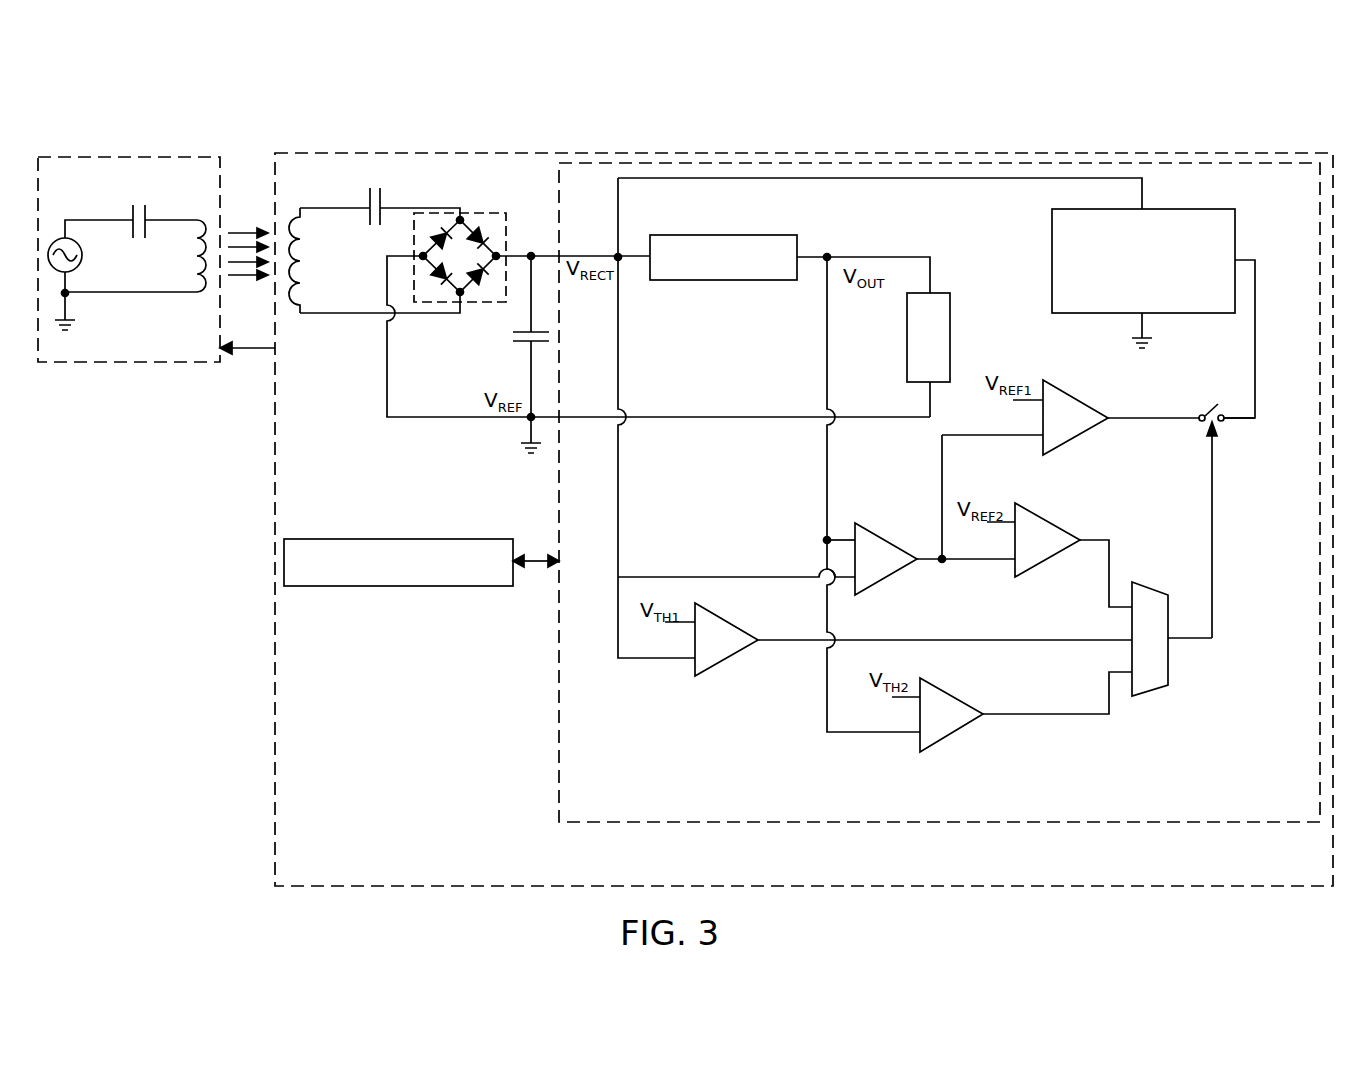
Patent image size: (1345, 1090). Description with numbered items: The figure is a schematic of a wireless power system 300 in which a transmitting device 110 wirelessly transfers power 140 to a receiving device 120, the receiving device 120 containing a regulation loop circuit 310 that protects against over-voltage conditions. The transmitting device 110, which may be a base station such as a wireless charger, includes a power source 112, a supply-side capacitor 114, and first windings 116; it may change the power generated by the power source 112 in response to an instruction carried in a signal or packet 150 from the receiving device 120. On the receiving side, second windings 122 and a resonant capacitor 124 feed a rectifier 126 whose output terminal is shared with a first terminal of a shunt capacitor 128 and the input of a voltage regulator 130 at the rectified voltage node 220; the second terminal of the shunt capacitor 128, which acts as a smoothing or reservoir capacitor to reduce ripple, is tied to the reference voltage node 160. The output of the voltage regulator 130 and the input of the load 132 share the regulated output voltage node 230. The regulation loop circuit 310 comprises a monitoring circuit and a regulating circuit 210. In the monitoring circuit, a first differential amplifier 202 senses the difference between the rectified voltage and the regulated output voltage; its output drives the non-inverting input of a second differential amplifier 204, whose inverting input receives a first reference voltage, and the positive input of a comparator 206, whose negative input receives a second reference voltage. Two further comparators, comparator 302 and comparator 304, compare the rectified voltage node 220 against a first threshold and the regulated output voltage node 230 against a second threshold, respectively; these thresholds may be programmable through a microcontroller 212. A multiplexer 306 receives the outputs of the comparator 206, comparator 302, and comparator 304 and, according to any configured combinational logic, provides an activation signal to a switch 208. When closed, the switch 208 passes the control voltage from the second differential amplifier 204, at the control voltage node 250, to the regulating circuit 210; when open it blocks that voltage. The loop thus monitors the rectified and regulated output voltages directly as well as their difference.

The wireless power system 300 is at (1286, 68).
The transmitting device 110 is at (102, 157).
The power source 112 is at (84, 256).
The supply-side capacitor 114 is at (148, 212).
The first windings 116 is at (191, 292).
The power 140 is at (249, 225).
The signal or packet 150 is at (250, 358).
The receiving device 120 is at (713, 153).
The second windings 122 is at (309, 265).
The resonant capacitor 124 is at (381, 200).
The rectifier 126 is at (494, 213).
The shunt capacitor 128 is at (512, 338).
The VRECT node 220 is at (531, 252).
The VREF node 160 is at (527, 428).
The voltage regulator 130 is at (733, 235).
The VOUT node 230 is at (830, 256).
The load 132 is at (906, 340).
The regulating circuit 210 is at (1051, 262).
The switch 208 is at (1204, 413).
The VCONT node 250 is at (1256, 426).
The second differential amplifier 204 is at (1075, 447).
The comparator 206 is at (1048, 571).
The first differential amplifier 202 is at (882, 596).
The comparator 302 is at (728, 670).
The comparator 304 is at (963, 745).
The multiplexer 306 is at (1150, 703).
The microcontroller 212 is at (427, 539).
The regulation loop circuit 310 is at (685, 822).